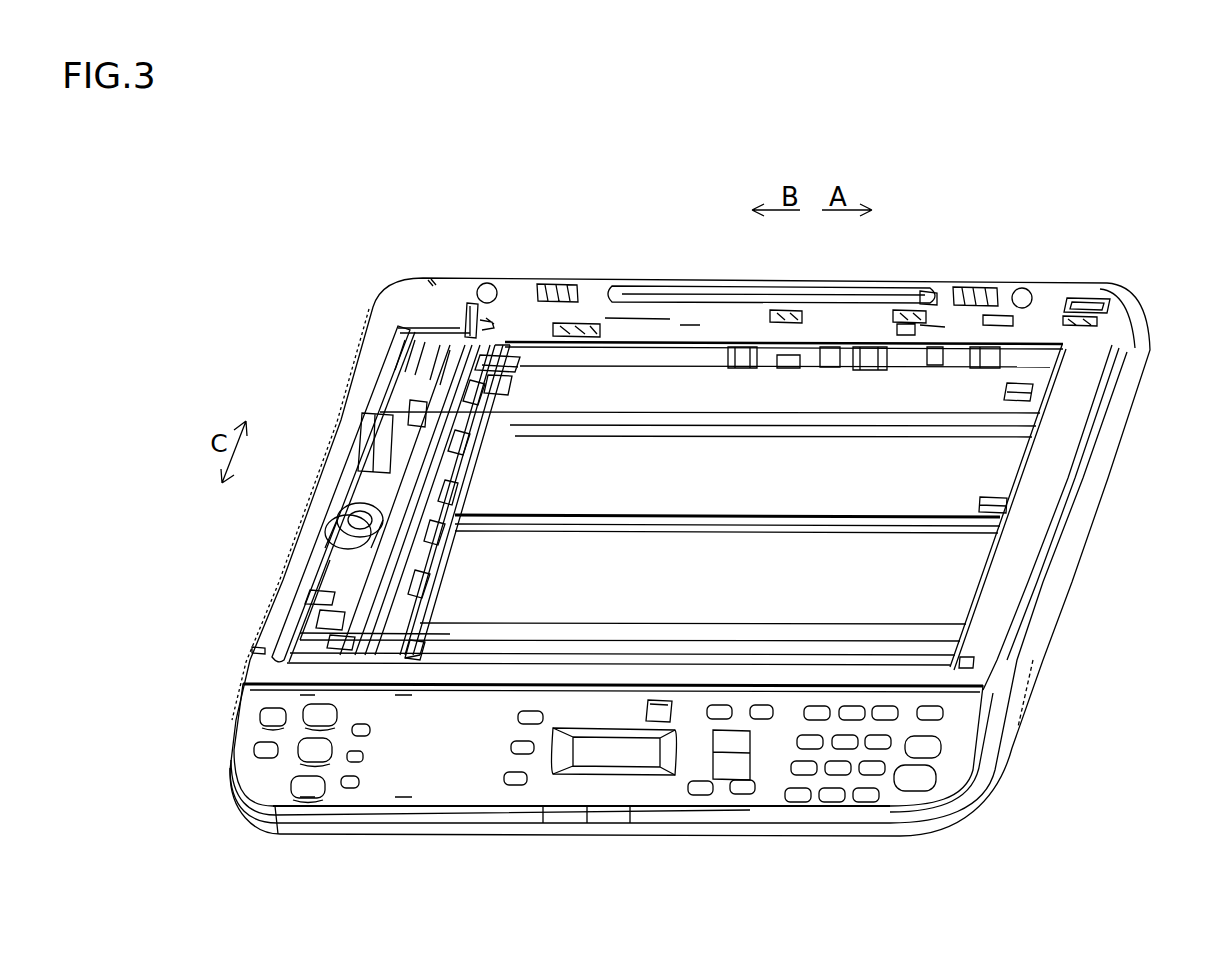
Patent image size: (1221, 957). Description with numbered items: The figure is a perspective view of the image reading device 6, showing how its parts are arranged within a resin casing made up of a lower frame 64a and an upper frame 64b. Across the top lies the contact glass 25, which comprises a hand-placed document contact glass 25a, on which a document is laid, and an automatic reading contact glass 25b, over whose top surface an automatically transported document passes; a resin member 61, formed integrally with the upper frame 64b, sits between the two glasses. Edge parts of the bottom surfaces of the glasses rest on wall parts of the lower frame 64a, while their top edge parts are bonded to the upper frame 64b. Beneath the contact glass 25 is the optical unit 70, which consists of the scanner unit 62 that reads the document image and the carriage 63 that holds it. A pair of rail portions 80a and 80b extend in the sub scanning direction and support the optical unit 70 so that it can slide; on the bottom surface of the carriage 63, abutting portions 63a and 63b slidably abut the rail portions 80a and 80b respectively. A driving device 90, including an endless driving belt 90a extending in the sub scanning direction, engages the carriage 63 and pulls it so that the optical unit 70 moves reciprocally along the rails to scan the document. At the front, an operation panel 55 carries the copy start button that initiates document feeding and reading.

The image reading device 6 is at (1065, 258).
The contact glass 25 is at (668, 320).
The hand-placed document contact glass 25a is at (628, 385).
The automatic reading contact glass 25b is at (410, 381).
The operation panel 55 is at (768, 790).
The resin member 61 is at (467, 300).
The scanner unit 62 is at (474, 440).
The carriage 63 is at (478, 472).
The abutting portion 63a is at (505, 404).
The abutting portion 63b is at (418, 647).
The lower frame 64a is at (1098, 462).
The upper frame 64b is at (1068, 398).
The optical unit 70 is at (455, 548).
The rail portion 80a is at (727, 430).
The rail portion 80b is at (720, 633).
The driving device 90 is at (481, 611).
The driving belt 90a is at (636, 528).